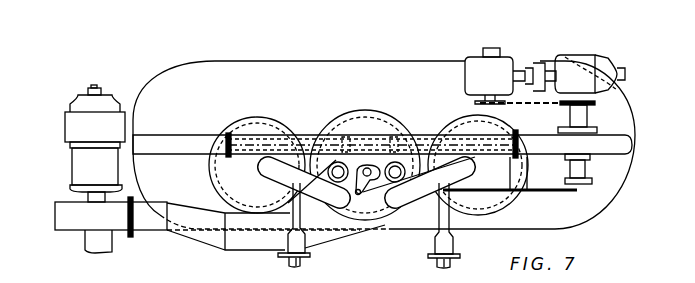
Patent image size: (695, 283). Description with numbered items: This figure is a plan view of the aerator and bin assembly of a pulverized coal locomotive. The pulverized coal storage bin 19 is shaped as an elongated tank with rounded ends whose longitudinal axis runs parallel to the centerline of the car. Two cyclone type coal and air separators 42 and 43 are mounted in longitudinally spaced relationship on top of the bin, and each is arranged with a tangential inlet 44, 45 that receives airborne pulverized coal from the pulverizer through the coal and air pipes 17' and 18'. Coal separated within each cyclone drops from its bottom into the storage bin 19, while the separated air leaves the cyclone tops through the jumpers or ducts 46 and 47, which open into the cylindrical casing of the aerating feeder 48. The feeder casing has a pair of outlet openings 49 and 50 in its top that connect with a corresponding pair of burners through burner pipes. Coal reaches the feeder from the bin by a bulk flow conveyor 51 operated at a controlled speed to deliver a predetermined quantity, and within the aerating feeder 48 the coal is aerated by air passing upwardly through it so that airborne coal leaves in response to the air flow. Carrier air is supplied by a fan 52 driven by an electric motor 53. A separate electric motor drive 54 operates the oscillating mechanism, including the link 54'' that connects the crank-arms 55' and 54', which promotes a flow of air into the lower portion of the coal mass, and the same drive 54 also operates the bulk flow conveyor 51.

The pulverized coal storage bin 19 is at (598, 185).
The bulk flow conveyor 51 is at (632, 138).
The cyclone type coal and air separator 43 is at (218, 176).
The aerating feeder 48 is at (372, 212).
The jumper or duct 47 is at (470, 182).
The jumper or duct 46 is at (279, 188).
The outlet opening 49 is at (336, 163).
The outlet opening 50 is at (398, 163).
The crank-arm 55' is at (365, 132).
The tangential inlet 44 is at (290, 217).
The coal and air pipe 17' is at (316, 266).
The tangential inlet 45 is at (446, 212).
The coal and air pipe 18' is at (466, 269).
The fan 52 is at (68, 229).
The electric motor 53 is at (68, 143).
The electric motor drive 54 is at (545, 60).
The crank-arm 54' is at (607, 162).
The link 54'' is at (510, 203).
The cyclone type coal and air separator 42 is at (526, 186).